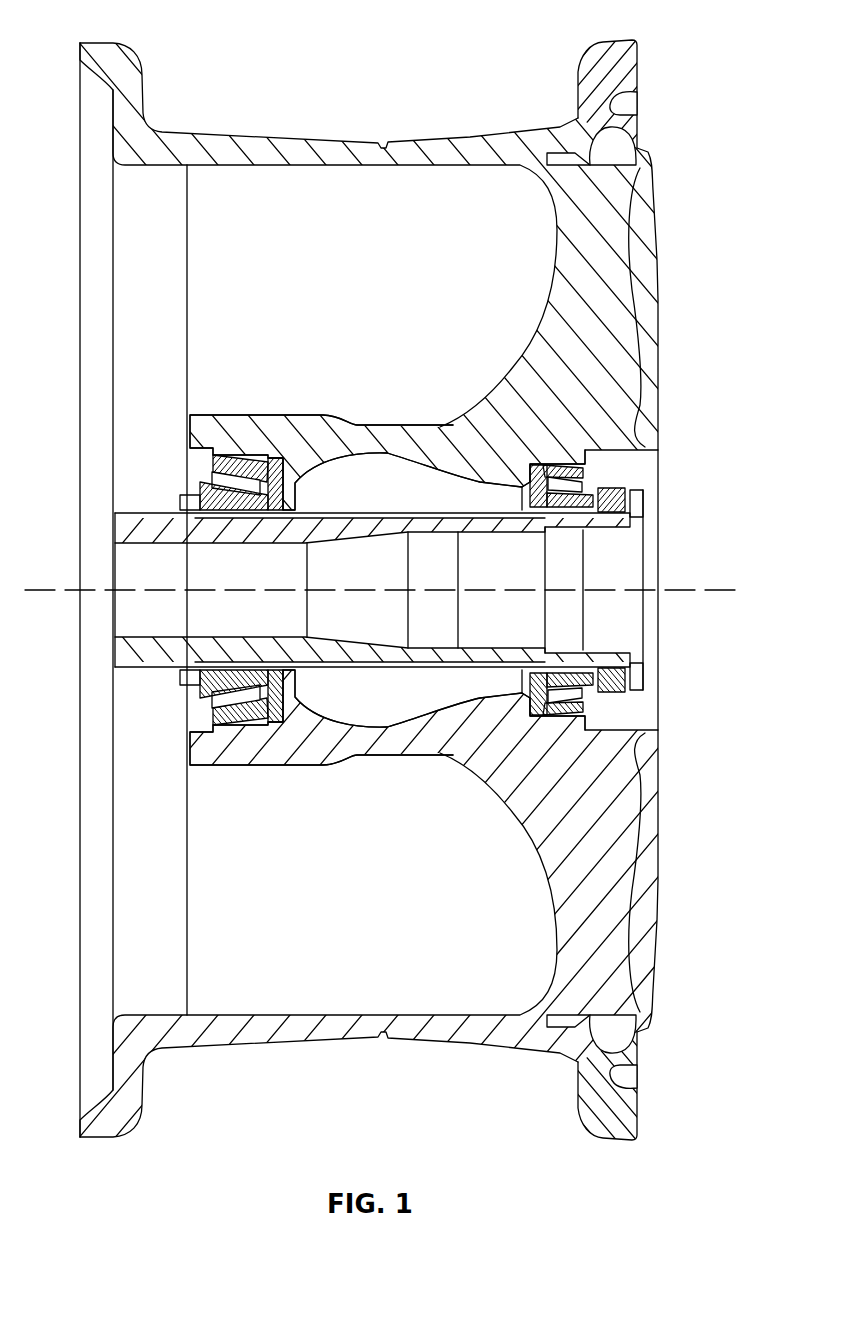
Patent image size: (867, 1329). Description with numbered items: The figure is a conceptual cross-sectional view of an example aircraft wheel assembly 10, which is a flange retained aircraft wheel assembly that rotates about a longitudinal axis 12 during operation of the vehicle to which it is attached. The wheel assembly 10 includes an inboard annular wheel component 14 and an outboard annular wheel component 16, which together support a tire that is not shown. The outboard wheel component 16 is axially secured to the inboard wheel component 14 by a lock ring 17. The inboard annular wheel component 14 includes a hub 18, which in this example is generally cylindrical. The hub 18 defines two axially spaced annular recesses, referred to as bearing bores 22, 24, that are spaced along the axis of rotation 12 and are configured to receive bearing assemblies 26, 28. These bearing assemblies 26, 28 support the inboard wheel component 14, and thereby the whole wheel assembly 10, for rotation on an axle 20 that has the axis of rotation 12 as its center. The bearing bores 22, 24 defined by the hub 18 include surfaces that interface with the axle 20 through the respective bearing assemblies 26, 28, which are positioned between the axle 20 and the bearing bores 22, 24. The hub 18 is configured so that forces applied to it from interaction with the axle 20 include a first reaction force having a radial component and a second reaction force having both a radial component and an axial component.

The aircraft wheel assembly 10 is at (433, 590).
The longitudinal axis 12 is at (50, 591).
The inboard annular wheel component 14 is at (556, 278).
The outboard annular wheel component 16 is at (638, 52).
The lock ring 17 is at (625, 150).
The hub 18 is at (389, 428).
The axle 20 is at (146, 513).
The bearing bore 22 is at (278, 457).
The bearing bore 24 is at (555, 462).
The bearing assembly 26 is at (241, 456).
The bearing assembly 28 is at (530, 461).